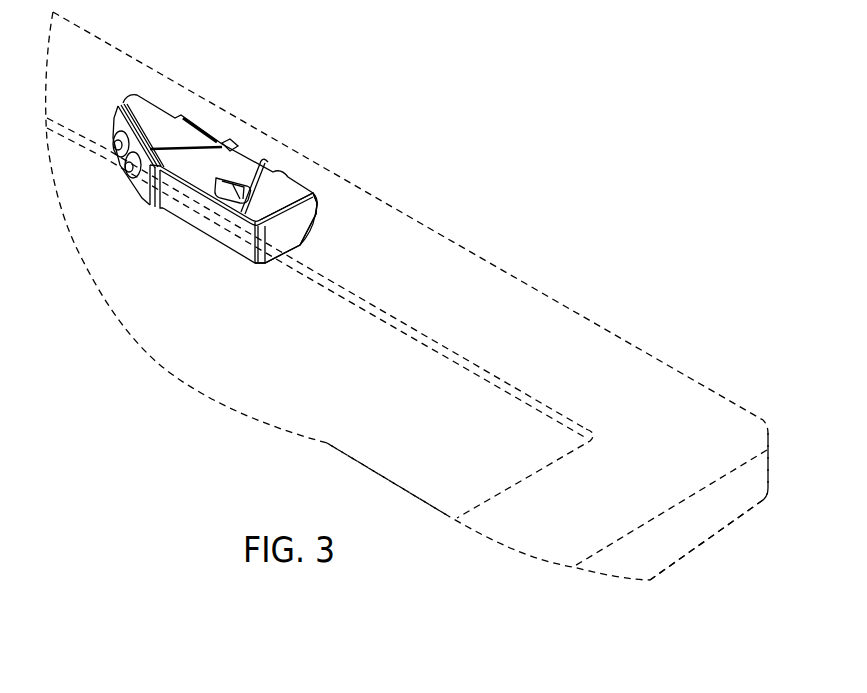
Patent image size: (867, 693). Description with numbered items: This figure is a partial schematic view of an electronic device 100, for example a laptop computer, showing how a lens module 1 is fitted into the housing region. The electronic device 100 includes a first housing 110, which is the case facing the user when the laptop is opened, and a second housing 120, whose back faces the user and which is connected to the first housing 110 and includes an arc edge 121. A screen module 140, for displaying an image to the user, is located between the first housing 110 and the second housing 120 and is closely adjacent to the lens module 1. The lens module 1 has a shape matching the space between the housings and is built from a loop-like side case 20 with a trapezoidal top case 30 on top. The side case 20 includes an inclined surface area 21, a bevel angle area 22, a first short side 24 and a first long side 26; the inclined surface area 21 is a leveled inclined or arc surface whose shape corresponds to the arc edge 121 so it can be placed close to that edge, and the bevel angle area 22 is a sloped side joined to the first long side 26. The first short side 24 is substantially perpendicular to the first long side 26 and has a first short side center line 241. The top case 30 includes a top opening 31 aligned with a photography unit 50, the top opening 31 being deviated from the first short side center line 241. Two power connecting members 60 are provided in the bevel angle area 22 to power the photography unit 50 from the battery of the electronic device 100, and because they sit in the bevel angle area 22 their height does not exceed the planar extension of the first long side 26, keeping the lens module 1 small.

The lens module 1 is at (219, 128).
The side case 20 is at (245, 252).
The inclined surface area 21 is at (319, 235).
The bevel angle area 22 is at (143, 185).
The first short side 24 is at (283, 236).
The first short side center line 241 is at (118, 111).
The first long side 26 is at (180, 210).
The top case 30 is at (150, 118).
The top opening 31 is at (243, 183).
The photography unit 50 is at (223, 204).
The power connecting members 60 is at (115, 145).
The electronic device 100 is at (690, 268).
The first housing 110 is at (478, 353).
The second housing 120 is at (716, 530).
The arc edge 121 is at (765, 500).
The screen module 140 is at (263, 393).